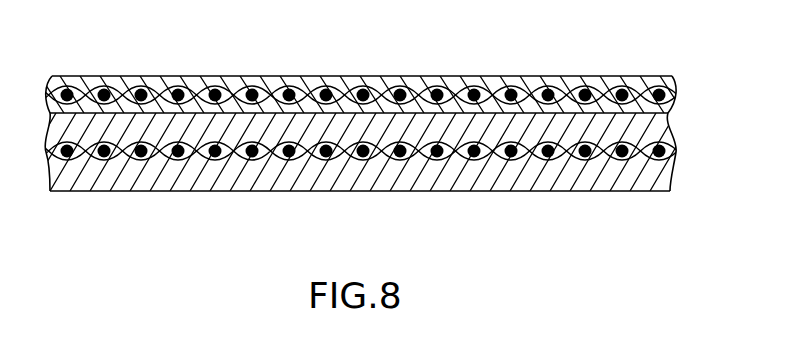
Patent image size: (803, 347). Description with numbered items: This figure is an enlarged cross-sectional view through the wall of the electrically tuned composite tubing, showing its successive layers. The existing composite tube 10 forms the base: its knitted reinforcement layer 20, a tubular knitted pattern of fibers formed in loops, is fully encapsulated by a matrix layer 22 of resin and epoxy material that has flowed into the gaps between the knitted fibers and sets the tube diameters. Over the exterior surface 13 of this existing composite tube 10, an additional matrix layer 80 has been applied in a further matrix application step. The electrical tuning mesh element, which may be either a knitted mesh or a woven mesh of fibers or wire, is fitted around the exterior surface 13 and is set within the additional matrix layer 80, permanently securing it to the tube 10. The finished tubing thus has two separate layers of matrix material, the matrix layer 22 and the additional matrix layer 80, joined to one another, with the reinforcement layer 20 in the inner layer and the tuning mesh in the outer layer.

The composite tube 10 is at (358, 141).
The exterior surface 13 is at (132, 78).
The knitted reinforcement layer 20 is at (315, 156).
The matrix layer 22 is at (358, 181).
The additional matrix layer 80 is at (363, 63).